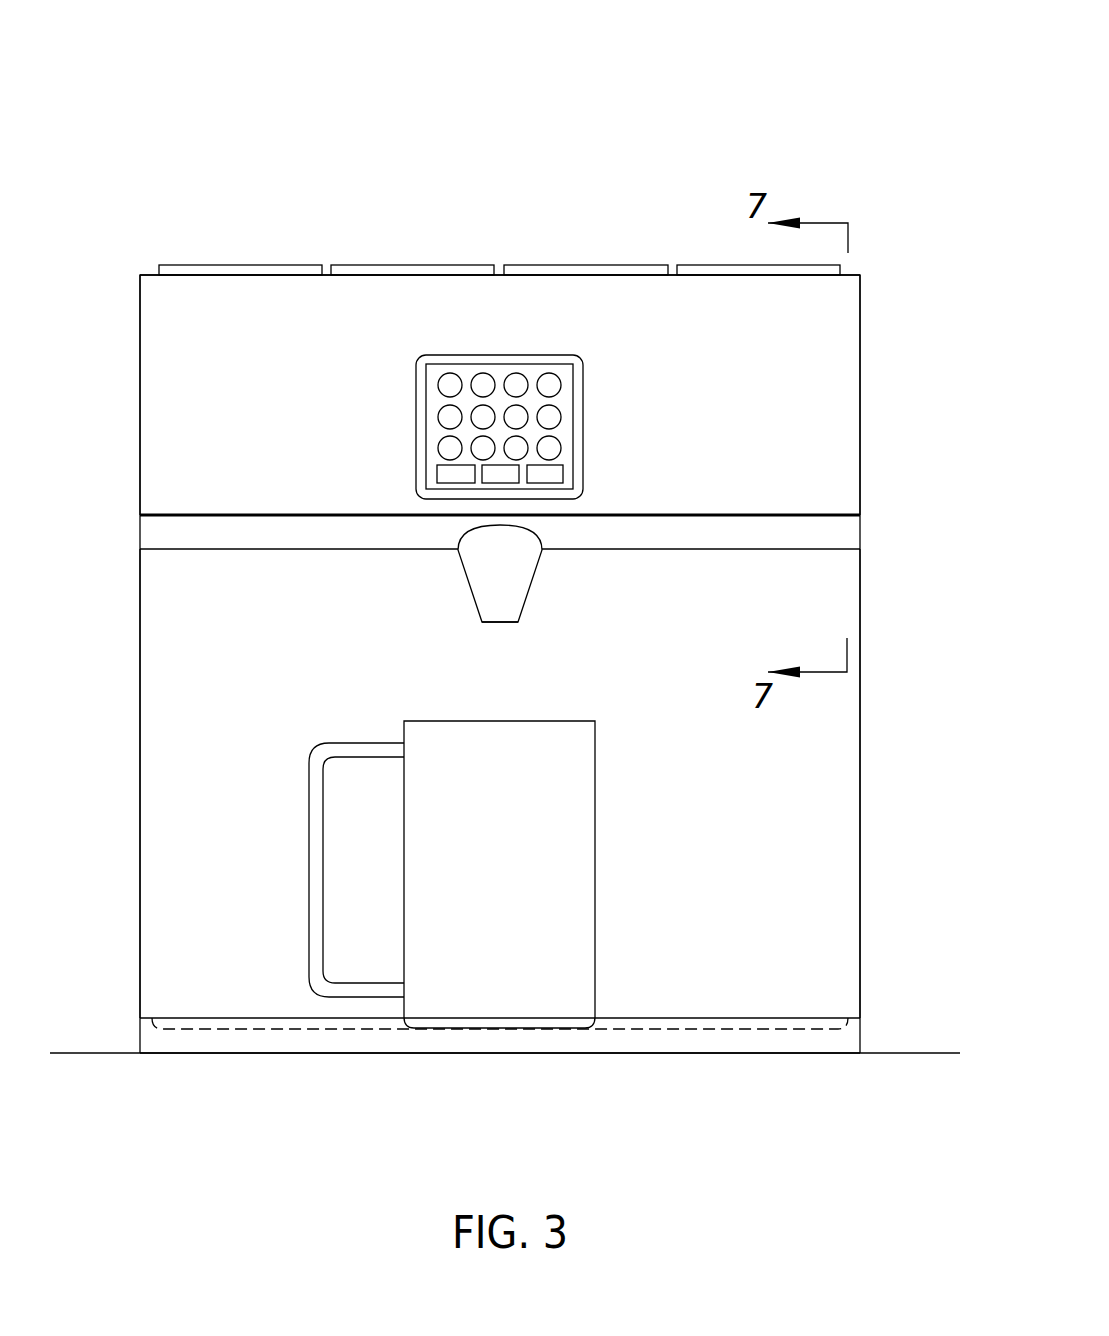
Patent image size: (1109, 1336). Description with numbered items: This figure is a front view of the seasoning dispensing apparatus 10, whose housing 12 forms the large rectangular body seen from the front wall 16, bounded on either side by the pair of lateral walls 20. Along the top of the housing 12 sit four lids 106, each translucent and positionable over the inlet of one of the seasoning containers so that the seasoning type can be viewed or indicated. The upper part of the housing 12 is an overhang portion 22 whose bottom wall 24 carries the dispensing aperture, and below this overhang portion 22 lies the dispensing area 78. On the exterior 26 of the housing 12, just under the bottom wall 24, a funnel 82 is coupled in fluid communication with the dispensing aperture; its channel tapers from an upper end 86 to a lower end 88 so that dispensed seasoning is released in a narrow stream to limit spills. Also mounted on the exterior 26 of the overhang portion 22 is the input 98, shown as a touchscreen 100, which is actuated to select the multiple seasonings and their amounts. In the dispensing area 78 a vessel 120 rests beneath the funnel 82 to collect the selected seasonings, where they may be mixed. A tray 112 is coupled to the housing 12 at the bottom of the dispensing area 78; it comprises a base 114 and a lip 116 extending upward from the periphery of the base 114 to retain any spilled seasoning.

The seasoning dispensing apparatus 10 is at (604, 124).
The housing 12 is at (118, 269).
The front wall 16 is at (195, 445).
The lateral walls 20 is at (137, 375).
The overhang portion 22 is at (825, 329).
The bottom wall 24 is at (777, 532).
The exterior 26 is at (577, 535).
The dispensing area 78 is at (688, 814).
The funnel 82 is at (493, 579).
The upper end 86 is at (465, 530).
The lower end 88 is at (500, 622).
The input 98 is at (598, 411).
The touchscreen 100 is at (553, 447).
The lids 106 is at (236, 265).
The tray 112 is at (750, 1068).
The base 114 is at (658, 1043).
The lip 116 is at (750, 1018).
The vessel 120 is at (562, 873).